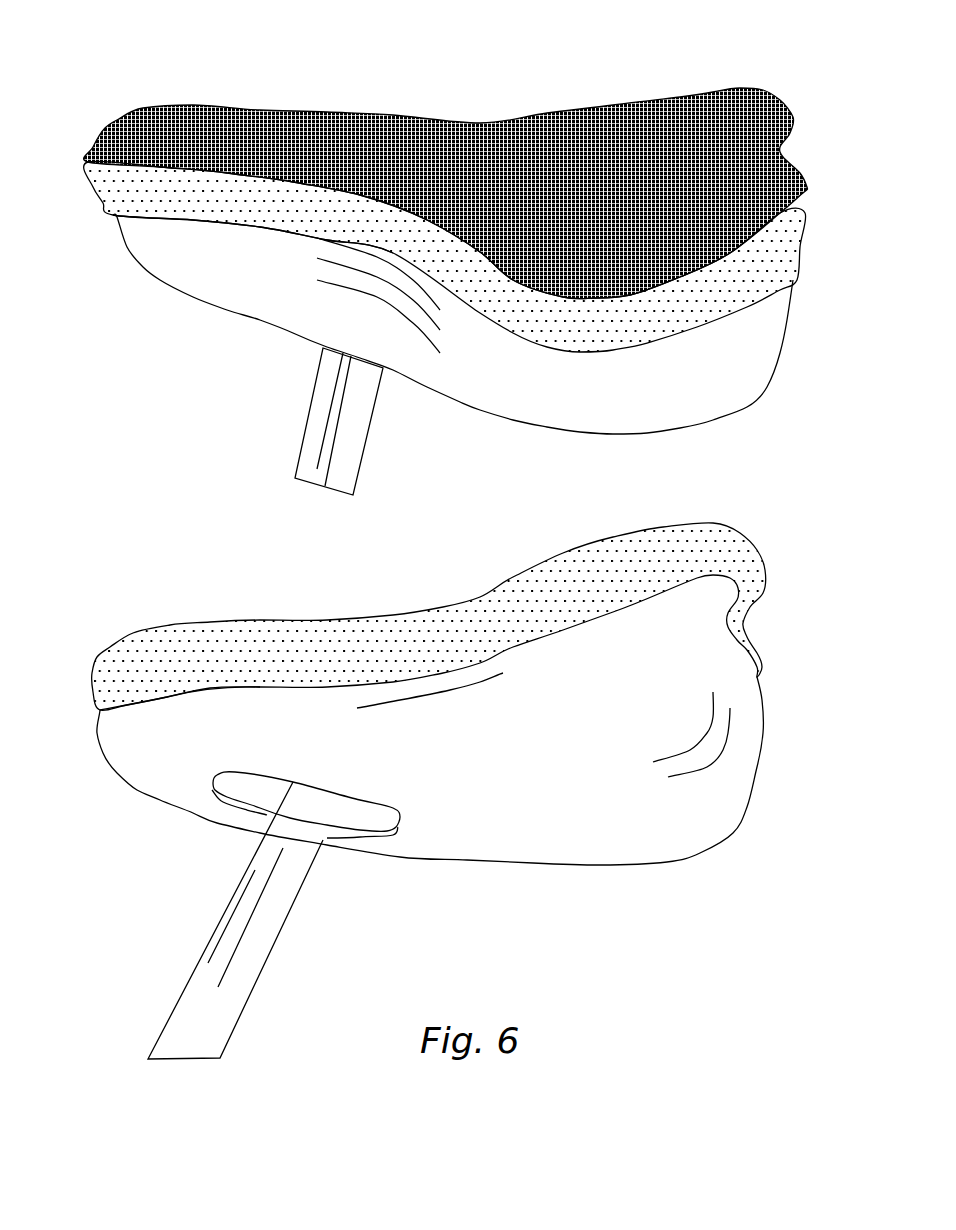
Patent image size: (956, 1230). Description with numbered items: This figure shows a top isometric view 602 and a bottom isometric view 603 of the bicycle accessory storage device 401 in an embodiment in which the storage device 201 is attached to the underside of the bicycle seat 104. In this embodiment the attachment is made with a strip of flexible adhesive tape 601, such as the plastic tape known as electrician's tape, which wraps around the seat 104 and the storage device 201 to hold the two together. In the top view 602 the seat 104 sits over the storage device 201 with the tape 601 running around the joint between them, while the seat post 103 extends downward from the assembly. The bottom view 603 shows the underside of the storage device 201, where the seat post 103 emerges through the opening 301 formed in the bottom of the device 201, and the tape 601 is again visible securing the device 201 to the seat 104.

The bicycle seat 104 is at (197, 110).
The accessory storage device 401 is at (712, 72).
The flexible adhesive tape 601 is at (263, 220).
The storage device 201 is at (670, 413).
The seat post 103 is at (313, 447).
The opening 301 is at (220, 823).
The top isometric view 602 is at (446, 237).
The bottom isometric view 603 is at (259, 842).